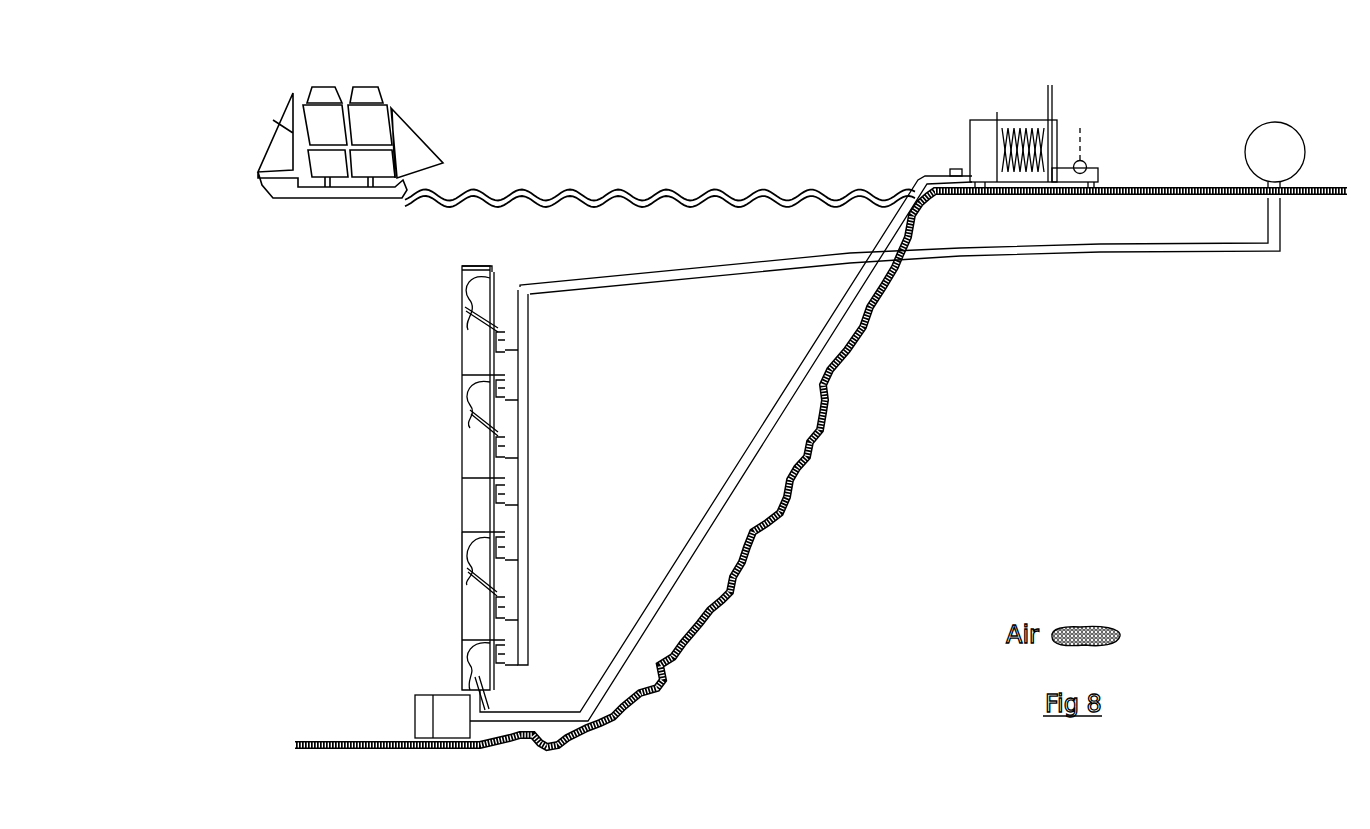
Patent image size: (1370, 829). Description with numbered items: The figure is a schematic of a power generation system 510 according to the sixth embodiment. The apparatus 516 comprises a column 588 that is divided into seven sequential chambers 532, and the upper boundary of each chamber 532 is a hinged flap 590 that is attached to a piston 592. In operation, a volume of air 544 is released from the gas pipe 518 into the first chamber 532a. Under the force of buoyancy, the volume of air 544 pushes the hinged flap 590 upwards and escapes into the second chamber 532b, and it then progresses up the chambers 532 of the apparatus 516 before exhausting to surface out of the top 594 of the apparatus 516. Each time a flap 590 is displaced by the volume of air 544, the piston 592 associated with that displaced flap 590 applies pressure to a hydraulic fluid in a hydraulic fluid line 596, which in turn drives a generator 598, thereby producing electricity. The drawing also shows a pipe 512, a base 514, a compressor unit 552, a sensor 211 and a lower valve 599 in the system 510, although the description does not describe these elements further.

The power generation system 510 is at (729, 178).
The sensor float switch 211 is at (1080, 124).
The generator 598 is at (1246, 141).
The air supply pipe 512 is at (1093, 185).
The base platform 514 is at (1047, 188).
The compressor 552 is at (991, 186).
The gas pipe 518 is at (866, 314).
The top 594 is at (493, 268).
The hinged flap 590 is at (469, 321).
The piston 592 is at (520, 340).
The column 588 is at (462, 352).
The hydraulic fluid line 596 is at (530, 418).
The apparatus 516 is at (453, 462).
The second chamber 532b is at (497, 594).
The chambers 532 is at (460, 650).
The lower valve 599 is at (497, 603).
The volume of air 544 is at (483, 678).
The first chamber 532a is at (460, 672).